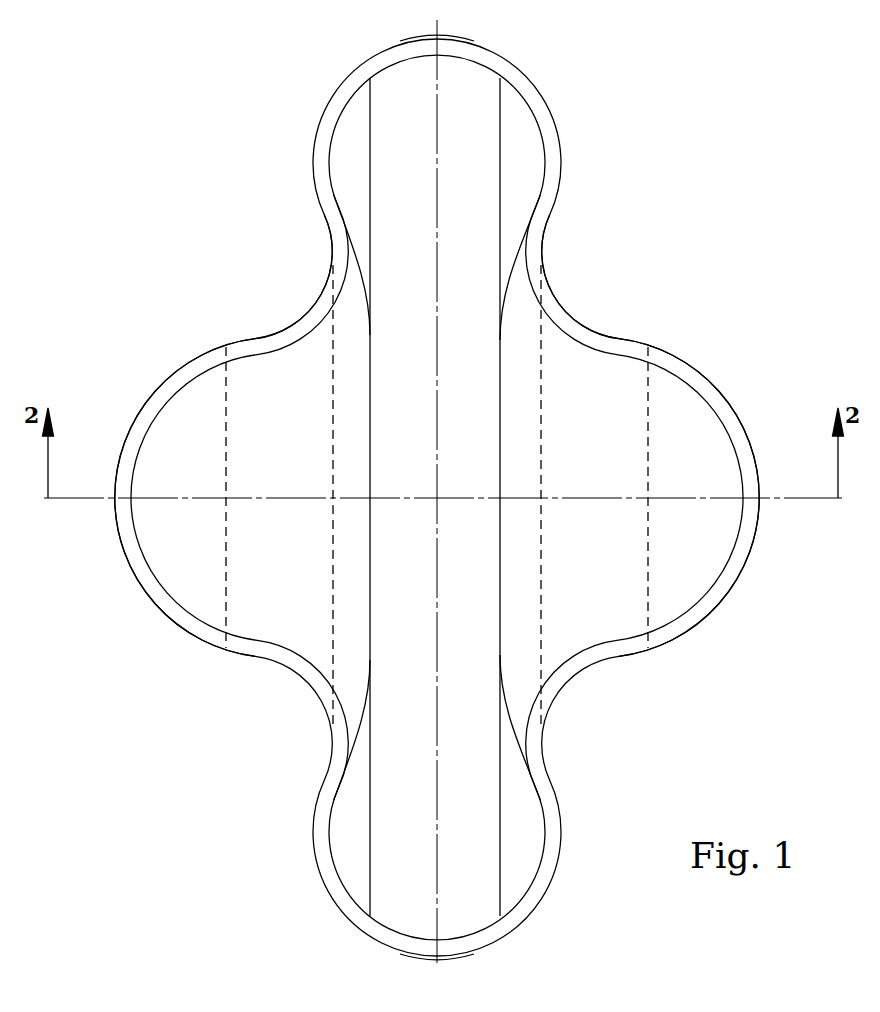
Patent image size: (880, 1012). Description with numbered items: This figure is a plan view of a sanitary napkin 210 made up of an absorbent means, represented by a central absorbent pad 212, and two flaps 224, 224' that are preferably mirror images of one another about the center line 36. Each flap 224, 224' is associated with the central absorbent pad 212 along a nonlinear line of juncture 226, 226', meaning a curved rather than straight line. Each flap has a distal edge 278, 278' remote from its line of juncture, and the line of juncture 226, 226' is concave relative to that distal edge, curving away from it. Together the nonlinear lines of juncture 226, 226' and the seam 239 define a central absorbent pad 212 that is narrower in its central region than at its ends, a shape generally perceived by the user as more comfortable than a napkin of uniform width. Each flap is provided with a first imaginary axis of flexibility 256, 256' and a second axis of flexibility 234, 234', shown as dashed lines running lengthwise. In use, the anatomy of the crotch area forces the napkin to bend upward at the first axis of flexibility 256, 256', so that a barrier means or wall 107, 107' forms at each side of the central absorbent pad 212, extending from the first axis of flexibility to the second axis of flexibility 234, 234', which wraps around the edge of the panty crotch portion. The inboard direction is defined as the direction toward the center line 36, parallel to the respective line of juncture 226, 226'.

The sanitary napkin 210 is at (278, 137).
The central absorbent pad 212 is at (586, 147).
The center line 36 is at (438, 920).
The seam 239 is at (450, 50).
The barrier means or wall 107 is at (265, 497).
The barrier means or wall 107' is at (575, 497).
The nonlinear line of juncture 226 is at (285, 497).
The nonlinear line of juncture 226' is at (586, 497).
The flap 224 is at (227, 277).
The flap 224' is at (647, 277).
The second axis of flexibility 234 is at (148, 483).
The second axis of flexibility 234' is at (740, 497).
The first imaginary axis of flexibility 256 is at (252, 464).
The first imaginary axis of flexibility 256' is at (608, 501).
The distal edge 278 is at (143, 498).
The distal edge 278' is at (712, 491).